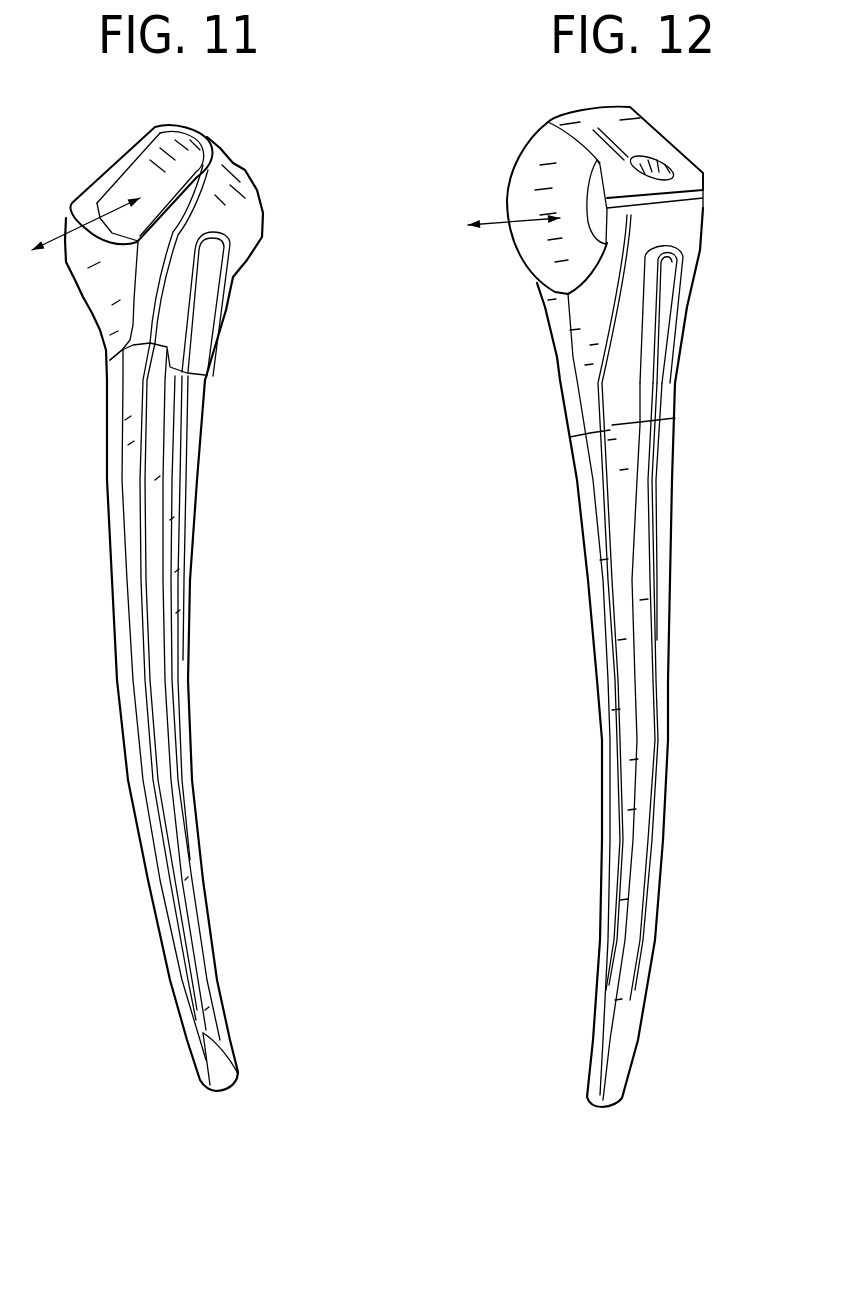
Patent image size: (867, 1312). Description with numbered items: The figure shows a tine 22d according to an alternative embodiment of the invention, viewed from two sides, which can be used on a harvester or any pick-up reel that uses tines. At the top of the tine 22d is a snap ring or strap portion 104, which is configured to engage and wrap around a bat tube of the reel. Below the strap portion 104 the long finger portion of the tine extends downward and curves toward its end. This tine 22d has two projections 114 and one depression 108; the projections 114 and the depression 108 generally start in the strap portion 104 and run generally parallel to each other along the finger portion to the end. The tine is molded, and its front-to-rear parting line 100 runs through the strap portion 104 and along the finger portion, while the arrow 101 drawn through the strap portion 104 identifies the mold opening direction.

In FIG. 11, the tine 22d is at (240, 524).
In FIG. 12, the tine 22d is at (578, 593).
In FIG. 11, the parting line 100 is at (118, 390).
In FIG. 12, the parting line 100 is at (605, 673).
In FIG. 11, the arrow 101 is at (67, 263).
In FIG. 12, the arrow 101 is at (498, 225).
In FIG. 11, the snap ring or strap portion 104 is at (240, 222).
In FIG. 12, the snap ring or strap portion 104 is at (543, 183).
In FIG. 11, the depression 108 is at (163, 597).
In FIG. 12, the depression 108 is at (642, 678).
In FIG. 11, the projection 114 is at (153, 452).
In FIG. 12, the projection 114 is at (625, 600).